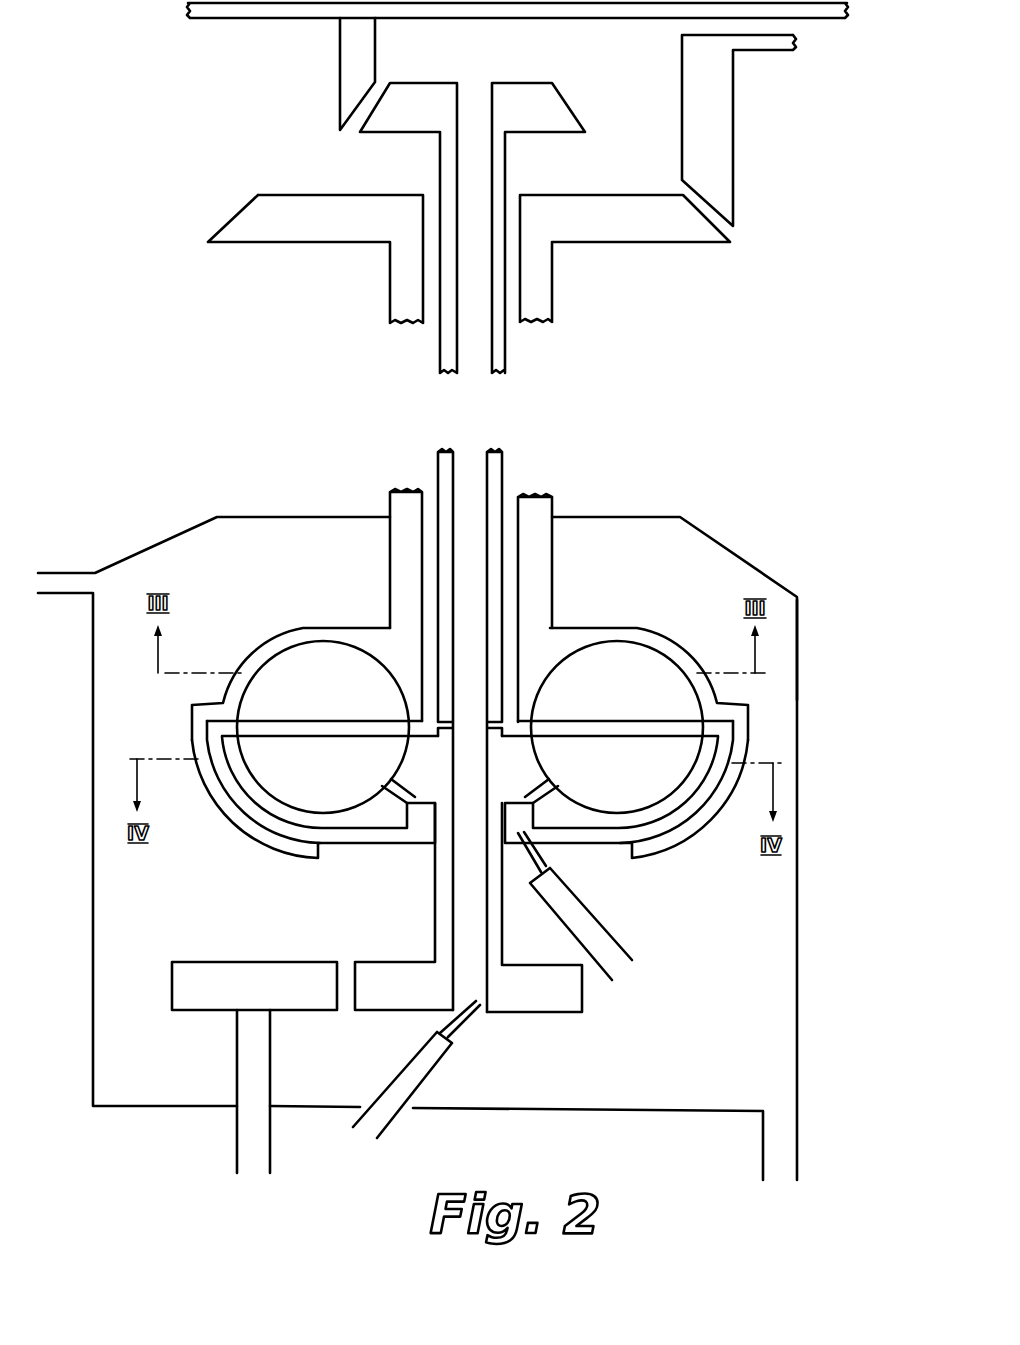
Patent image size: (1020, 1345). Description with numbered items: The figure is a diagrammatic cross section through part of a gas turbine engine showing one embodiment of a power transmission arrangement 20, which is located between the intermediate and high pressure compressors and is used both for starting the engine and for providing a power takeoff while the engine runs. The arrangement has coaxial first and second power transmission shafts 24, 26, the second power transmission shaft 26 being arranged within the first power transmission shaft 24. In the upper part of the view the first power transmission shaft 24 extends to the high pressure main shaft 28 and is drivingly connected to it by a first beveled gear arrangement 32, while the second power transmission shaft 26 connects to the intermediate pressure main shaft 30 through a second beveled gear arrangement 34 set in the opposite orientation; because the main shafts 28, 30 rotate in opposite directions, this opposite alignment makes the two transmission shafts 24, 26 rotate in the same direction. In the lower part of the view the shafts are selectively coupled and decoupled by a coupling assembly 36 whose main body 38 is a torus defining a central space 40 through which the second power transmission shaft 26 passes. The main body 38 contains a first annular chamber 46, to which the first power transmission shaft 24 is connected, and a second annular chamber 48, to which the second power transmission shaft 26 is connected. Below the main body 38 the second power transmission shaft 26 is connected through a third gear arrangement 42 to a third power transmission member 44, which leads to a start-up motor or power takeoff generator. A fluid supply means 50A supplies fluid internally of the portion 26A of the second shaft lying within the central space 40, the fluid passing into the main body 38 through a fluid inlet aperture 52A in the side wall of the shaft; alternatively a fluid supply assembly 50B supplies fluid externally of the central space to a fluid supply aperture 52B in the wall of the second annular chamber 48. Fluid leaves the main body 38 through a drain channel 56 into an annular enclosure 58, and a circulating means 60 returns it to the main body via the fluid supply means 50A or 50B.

The power transmission arrangement 20 is at (637, 1060).
The first power transmission shaft 24 is at (384, 292).
The second power transmission shaft 26 is at (514, 348).
The portion of the second power transmission shaft 26A is at (447, 702).
The high pressure main shaft 28 is at (777, 50).
The intermediate pressure main shaft 30 is at (263, 17).
The first beveled gear arrangement 32 is at (741, 236).
The second beveled gear arrangement 34 is at (346, 135).
The coupling assembly 36 is at (661, 628).
The main body 38 is at (558, 641).
The central space 40 is at (471, 541).
The third gear arrangement 42 is at (343, 950).
The third power transmission member 44 is at (243, 1138).
The first annular chamber 46 is at (296, 684).
The second annular chamber 48 is at (289, 785).
The fluid supply means 50A is at (408, 1087).
The fluid supply assembly 50B is at (603, 938).
The fluid inlet aperture 52A is at (450, 730).
The fluid supply aperture 52B is at (545, 797).
The drain channel 56 is at (215, 748).
The annular enclosure 58 is at (800, 647).
The circulating means 60 is at (72, 573).